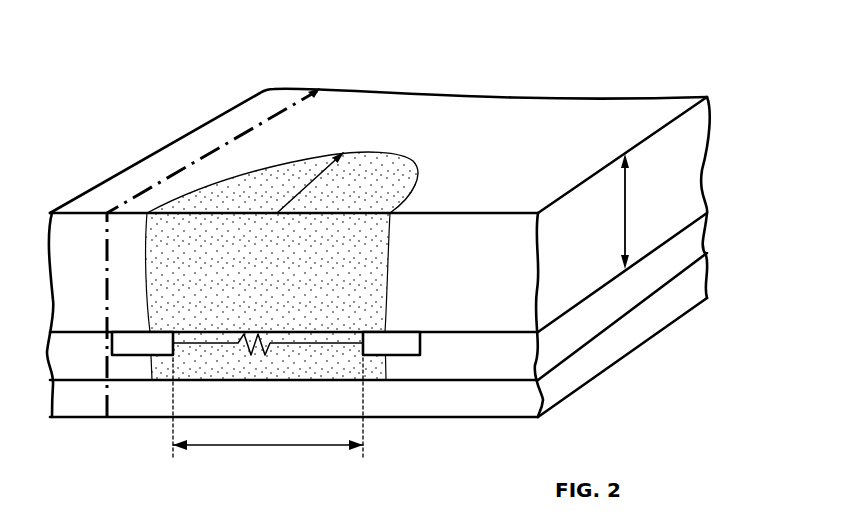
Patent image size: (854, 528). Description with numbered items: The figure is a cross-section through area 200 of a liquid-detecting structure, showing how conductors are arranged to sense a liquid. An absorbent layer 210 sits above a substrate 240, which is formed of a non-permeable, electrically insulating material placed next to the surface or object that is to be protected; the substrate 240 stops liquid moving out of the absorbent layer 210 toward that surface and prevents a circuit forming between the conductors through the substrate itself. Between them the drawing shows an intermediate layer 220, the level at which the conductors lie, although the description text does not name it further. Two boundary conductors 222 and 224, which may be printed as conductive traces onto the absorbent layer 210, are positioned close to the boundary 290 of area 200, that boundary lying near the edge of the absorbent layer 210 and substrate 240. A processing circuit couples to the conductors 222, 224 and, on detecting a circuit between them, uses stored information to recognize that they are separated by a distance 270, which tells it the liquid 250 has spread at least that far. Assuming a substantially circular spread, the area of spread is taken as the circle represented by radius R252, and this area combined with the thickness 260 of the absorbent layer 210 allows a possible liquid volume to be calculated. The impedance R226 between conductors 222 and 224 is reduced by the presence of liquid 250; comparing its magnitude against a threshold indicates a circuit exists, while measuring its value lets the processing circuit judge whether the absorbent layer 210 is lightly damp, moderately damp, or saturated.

The area 200 is at (104, 17).
The absorbent layer 210 is at (708, 158).
The resistive layer 220 is at (708, 227).
The substrate 240 is at (708, 272).
The liquid 250 is at (420, 166).
The radius R252 is at (323, 182).
The thickness 260 is at (640, 199).
The distance 270 is at (258, 447).
The boundary 290 is at (231, 142).
The boundary conductor 224 is at (112, 346).
The boundary conductor 222 is at (420, 339).
The impedance R226 is at (268, 355).